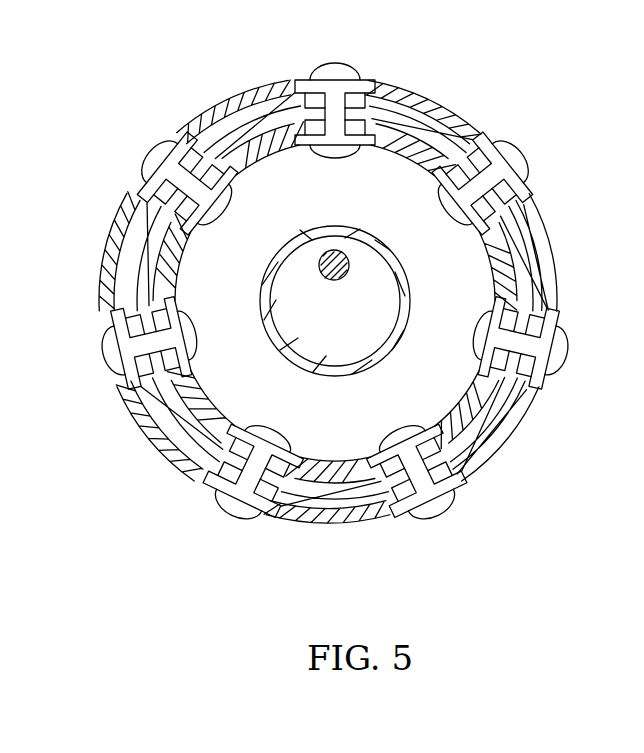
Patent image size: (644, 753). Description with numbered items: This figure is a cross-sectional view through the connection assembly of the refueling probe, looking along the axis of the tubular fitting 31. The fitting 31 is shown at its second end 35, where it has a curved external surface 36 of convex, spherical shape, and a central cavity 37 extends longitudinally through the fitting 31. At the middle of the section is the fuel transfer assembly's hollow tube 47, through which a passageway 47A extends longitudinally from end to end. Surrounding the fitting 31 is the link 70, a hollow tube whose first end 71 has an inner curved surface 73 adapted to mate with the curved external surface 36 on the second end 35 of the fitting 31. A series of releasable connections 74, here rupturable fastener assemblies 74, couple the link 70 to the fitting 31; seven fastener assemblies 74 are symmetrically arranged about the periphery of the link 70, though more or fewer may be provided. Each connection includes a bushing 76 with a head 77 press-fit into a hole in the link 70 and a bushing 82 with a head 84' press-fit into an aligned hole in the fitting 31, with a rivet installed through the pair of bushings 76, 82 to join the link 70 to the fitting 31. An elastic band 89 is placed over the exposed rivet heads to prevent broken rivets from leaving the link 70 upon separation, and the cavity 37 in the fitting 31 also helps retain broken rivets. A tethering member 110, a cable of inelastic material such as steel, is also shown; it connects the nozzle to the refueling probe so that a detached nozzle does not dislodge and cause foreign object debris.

The tubular fitting 31 is at (319, 299).
The second end 35 is at (553, 250).
The curved external surface 36 is at (319, 299).
The central cavity 37 is at (270, 207).
The hollow tube 47 is at (275, 346).
The passageway 47A is at (336, 302).
The link 70 is at (336, 528).
The first end 71 is at (533, 242).
The inner curved surface 73 is at (381, 94).
The releasable connections 74 is at (339, 290).
The bushing 76 is at (353, 80).
The head 77 is at (306, 80).
The bushing 82 is at (320, 146).
The hook 84' is at (356, 157).
The elastic band 89 is at (104, 303).
The tethering member 110 is at (348, 259).